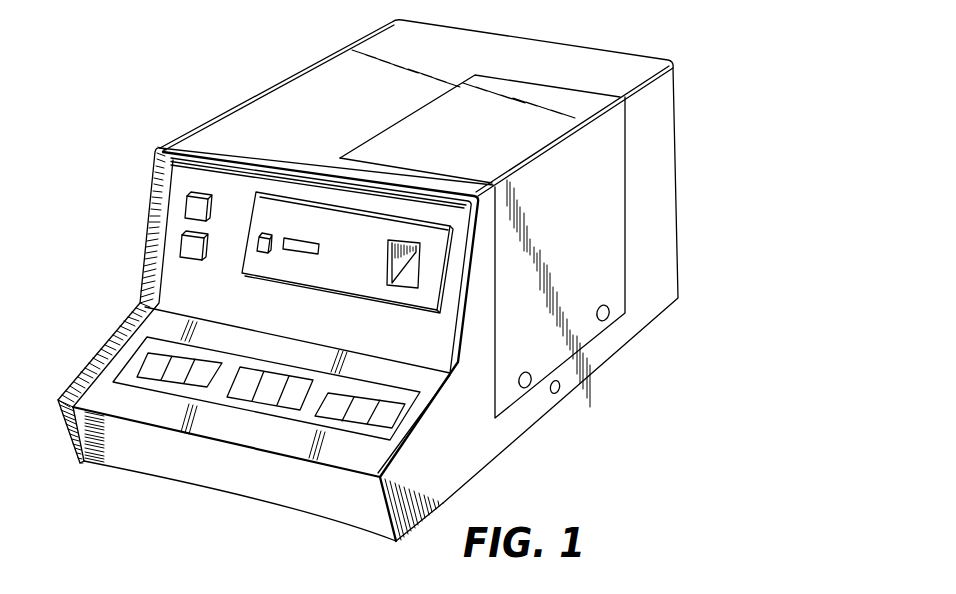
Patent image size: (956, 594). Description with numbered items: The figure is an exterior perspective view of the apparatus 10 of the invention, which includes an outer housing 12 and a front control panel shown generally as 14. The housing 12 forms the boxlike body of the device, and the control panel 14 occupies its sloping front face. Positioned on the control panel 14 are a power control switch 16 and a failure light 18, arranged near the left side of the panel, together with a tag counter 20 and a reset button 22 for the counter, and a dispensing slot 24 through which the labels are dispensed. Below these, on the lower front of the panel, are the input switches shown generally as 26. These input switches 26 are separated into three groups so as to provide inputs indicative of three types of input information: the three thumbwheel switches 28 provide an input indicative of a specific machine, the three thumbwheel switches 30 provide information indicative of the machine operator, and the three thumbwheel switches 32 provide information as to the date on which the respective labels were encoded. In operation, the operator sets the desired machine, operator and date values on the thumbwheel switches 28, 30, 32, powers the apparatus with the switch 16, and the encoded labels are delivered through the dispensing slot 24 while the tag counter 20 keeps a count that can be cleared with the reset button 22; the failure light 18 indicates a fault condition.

The apparatus 10 is at (281, 68).
The outer housing 12 is at (333, 67).
The front control panel 14 is at (173, 298).
The power control switch 16 is at (200, 192).
The failure light 18 is at (192, 261).
The tag counter 20 is at (312, 241).
The reset button 22 is at (265, 232).
The dispensing slot 24 is at (388, 265).
The input switches 26 is at (227, 407).
The thumbwheel switches 28 is at (169, 385).
The thumbwheel switches 30 is at (262, 402).
The thumbwheel switches 32 is at (342, 420).